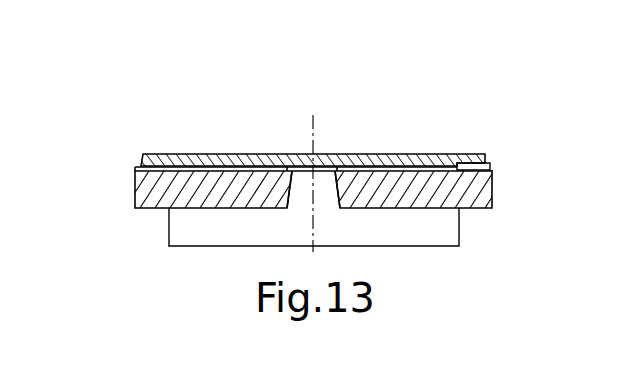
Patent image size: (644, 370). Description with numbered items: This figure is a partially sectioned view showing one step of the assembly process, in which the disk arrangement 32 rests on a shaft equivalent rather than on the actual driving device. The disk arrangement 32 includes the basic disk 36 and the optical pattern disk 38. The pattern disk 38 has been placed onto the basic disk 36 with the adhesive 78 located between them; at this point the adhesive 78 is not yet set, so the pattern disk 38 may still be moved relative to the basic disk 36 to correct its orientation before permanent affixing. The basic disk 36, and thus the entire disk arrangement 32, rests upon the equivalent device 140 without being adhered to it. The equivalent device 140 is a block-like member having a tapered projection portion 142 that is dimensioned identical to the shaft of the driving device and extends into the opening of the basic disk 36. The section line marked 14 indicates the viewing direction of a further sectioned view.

The section line 14- 14 is at (100, 54).
The disk arrangement 32 is at (503, 183).
The basic disk 36 is at (468, 194).
The optical pattern disk 38 is at (382, 153).
The adhesive 78 is at (459, 166).
The equivalent device 140 is at (156, 232).
The projection portion 142 is at (302, 200).